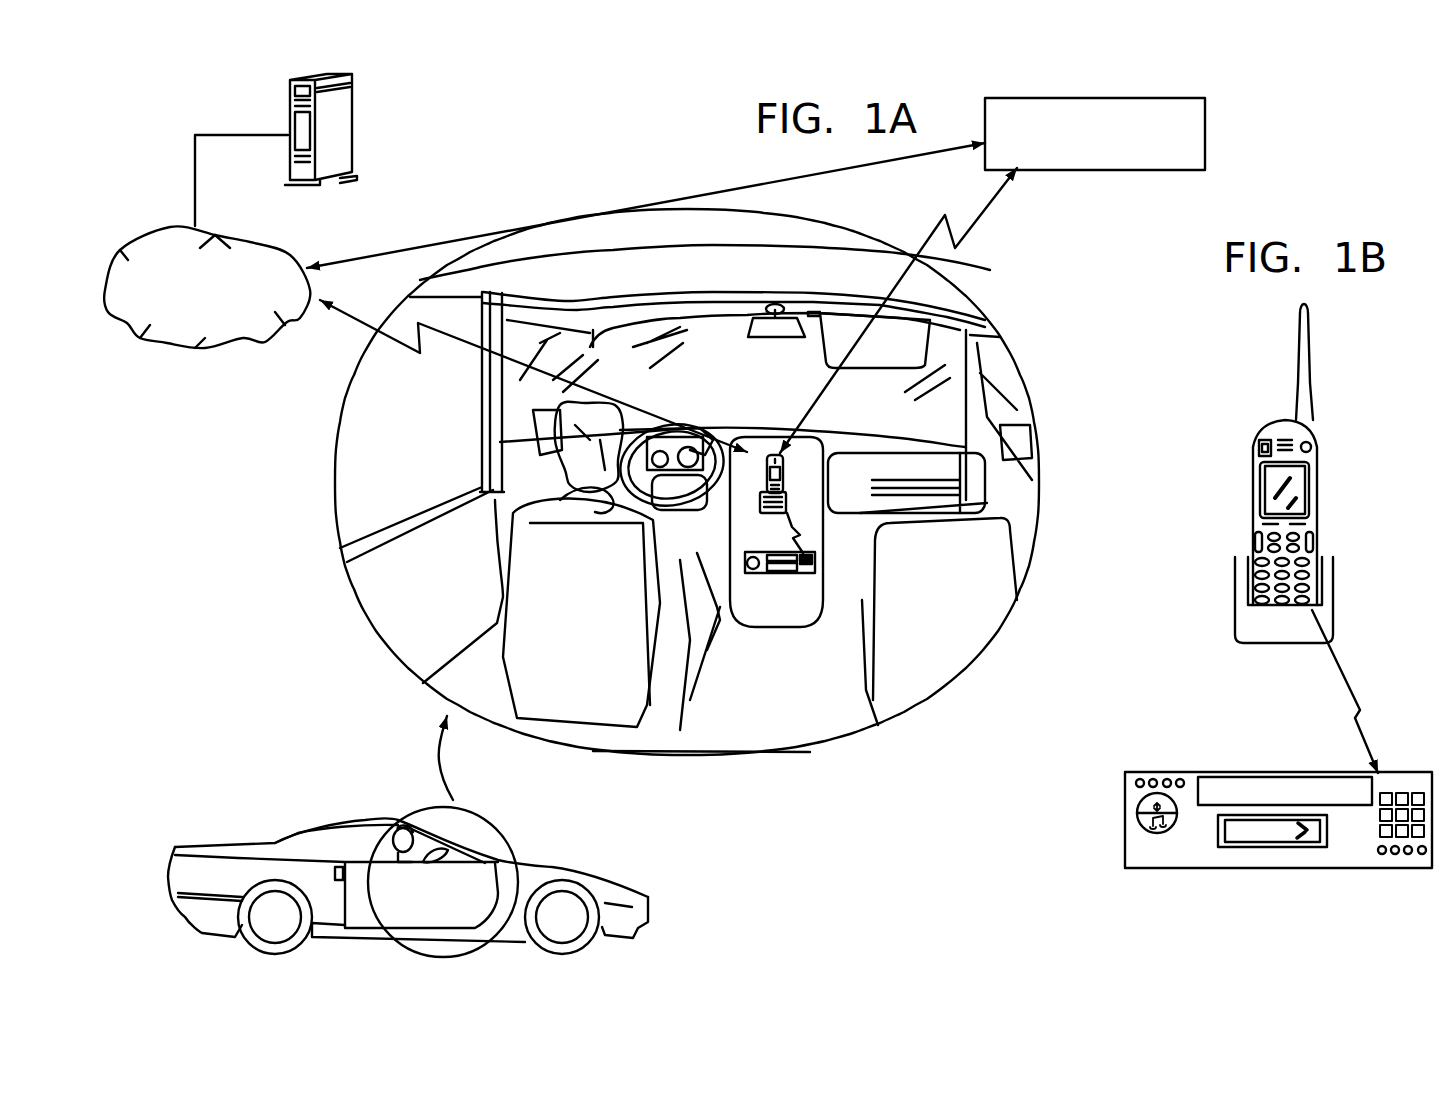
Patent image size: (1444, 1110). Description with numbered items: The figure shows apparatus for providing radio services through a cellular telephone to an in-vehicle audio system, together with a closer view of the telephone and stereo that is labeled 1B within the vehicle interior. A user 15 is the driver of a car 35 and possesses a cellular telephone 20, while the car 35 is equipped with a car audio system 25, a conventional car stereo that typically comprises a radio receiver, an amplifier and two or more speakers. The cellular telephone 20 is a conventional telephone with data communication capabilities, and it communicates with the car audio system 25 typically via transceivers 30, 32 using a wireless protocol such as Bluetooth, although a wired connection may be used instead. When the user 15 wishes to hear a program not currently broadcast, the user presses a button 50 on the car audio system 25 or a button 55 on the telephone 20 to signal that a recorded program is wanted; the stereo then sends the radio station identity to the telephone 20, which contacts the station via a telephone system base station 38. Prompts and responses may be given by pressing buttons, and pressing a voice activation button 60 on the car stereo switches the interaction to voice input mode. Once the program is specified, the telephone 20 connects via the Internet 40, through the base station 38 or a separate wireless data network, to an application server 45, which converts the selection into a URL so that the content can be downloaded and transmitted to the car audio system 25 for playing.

In FIG. 1A, the vehicle head unit / console (shown in FIG. 1B) 1B is at (823, 545).
In FIG. 1A, the user 15 is at (607, 507).
In FIG. 1A, the cellular telephone 20 is at (783, 461).
In FIG. 1B, the cellular telephone 20 is at (1278, 427).
In FIG. 1A, the car audio system 25 is at (780, 573).
In FIG. 1B, the car audio system 25 is at (1313, 838).
In FIG. 1B, the transceiver 30 is at (1257, 437).
In FIG. 1B, the transceiver 32 is at (1220, 777).
In FIG. 1A, the car 35 is at (275, 842).
In FIG. 1A, the telephone system base station 38 is at (1117, 169).
In FIG. 1A, the Internet 40 is at (200, 343).
In FIG. 1A, the application server 45 is at (290, 107).
In FIG. 1B, the button 50 is at (1140, 822).
In FIG. 1B, the button 55 is at (1312, 447).
In FIG. 1B, the button 60 is at (1137, 797).